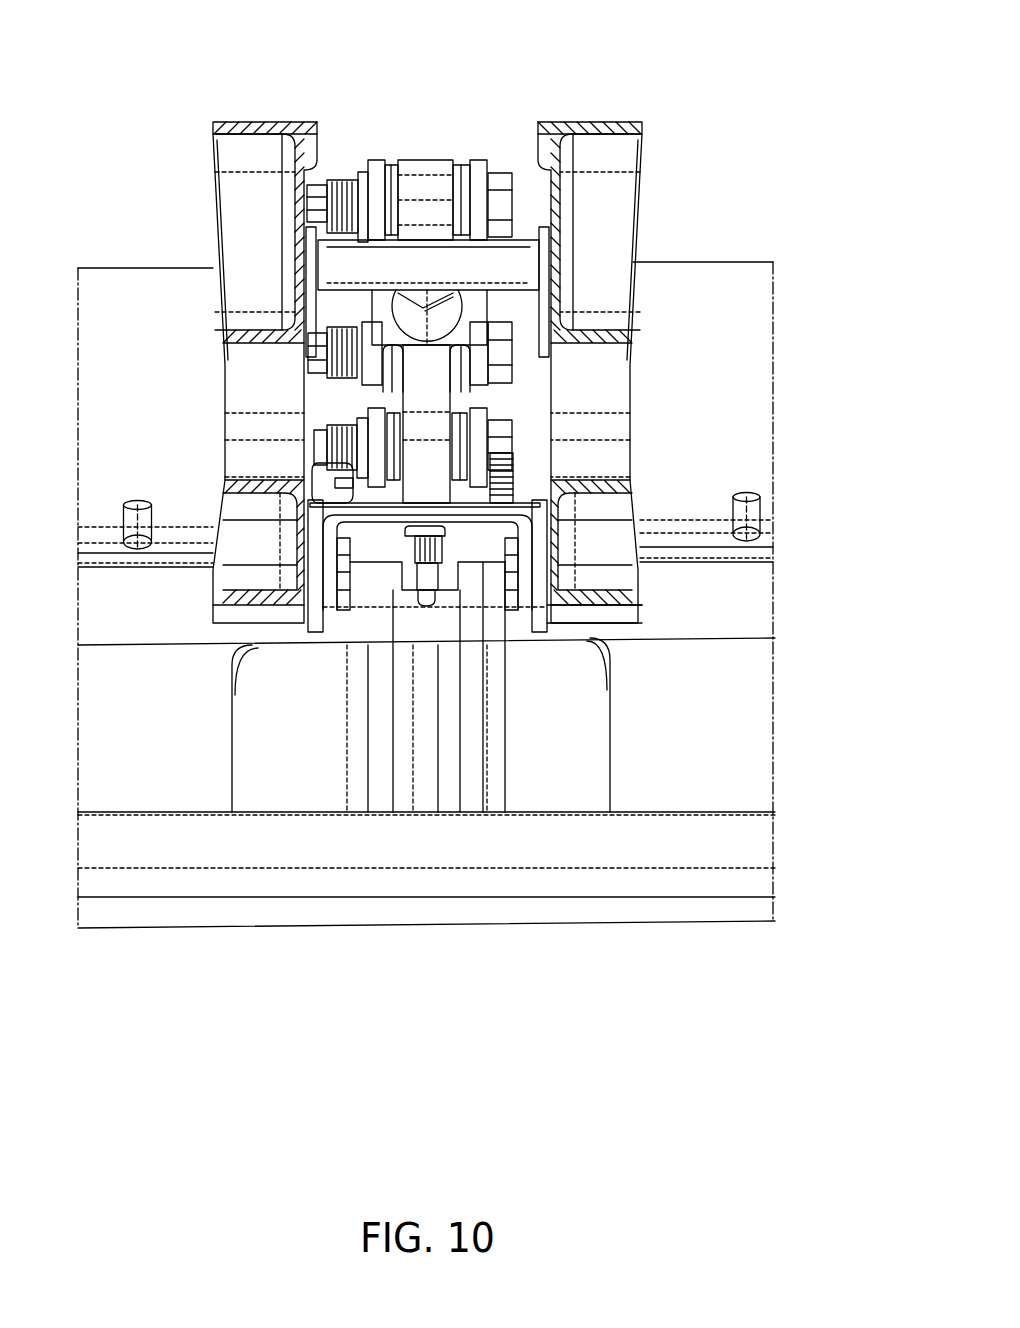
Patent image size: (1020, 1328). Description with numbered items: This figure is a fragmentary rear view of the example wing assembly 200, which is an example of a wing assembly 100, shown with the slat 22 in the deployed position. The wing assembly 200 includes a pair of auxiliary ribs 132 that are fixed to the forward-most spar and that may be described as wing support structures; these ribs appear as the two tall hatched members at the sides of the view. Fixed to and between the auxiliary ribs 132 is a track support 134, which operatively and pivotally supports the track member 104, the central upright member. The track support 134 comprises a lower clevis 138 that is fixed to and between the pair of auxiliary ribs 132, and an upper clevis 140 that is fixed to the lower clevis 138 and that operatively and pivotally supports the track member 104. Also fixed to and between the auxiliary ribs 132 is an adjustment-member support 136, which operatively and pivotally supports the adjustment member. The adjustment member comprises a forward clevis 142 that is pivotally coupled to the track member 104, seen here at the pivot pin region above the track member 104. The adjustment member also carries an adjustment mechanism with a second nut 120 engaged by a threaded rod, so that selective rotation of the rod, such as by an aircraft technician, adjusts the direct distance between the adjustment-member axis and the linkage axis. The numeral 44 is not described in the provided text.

The slat 22 is at (735, 262).
The pivot shaft assembly 44 is at (478, 158).
The wing assembly 100 is at (757, 52).
The wing assembly 200 is at (750, 90).
The track member 104 is at (425, 483).
The second nut 120 is at (420, 308).
The auxiliary ribs 132 is at (250, 120).
The track support 134 is at (537, 633).
The adjustment-member support 136 is at (310, 299).
The lower clevis 138 is at (550, 612).
The upper clevis 140 is at (512, 453).
The forward clevis 142 is at (468, 306).